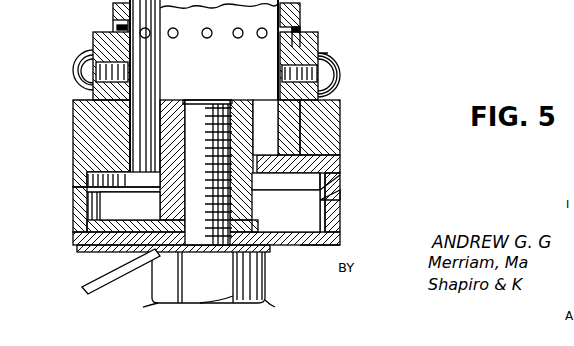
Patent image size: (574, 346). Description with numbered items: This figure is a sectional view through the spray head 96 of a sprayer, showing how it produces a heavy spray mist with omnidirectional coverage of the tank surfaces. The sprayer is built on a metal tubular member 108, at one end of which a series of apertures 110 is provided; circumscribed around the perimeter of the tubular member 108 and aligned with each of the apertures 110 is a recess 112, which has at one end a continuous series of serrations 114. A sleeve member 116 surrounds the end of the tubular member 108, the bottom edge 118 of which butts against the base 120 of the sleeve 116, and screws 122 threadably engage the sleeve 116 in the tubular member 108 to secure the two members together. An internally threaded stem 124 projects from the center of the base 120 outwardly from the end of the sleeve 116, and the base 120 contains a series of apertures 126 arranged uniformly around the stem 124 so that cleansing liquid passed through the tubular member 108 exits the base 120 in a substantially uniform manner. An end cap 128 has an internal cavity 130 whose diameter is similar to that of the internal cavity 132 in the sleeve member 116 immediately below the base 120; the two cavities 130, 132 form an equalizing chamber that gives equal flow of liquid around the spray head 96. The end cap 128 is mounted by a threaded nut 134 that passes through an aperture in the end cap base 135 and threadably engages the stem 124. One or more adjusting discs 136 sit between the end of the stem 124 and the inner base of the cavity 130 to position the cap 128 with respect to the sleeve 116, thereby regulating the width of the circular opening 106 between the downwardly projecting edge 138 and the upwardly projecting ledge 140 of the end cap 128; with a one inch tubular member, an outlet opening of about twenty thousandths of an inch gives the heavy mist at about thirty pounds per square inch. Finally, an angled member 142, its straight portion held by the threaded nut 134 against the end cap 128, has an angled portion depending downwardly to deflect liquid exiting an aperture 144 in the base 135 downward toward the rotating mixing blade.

The spray head 96 is at (342, 52).
The circular opening 106 is at (87, 187).
The tubular member 108 is at (318, 100).
The apertures 110 is at (178, 38).
The recess 112 is at (298, 31).
The serrations 114 is at (110, 25).
The sleeve member 116 is at (340, 120).
The bottom edge 118 is at (290, 155).
The base 120 is at (110, 157).
The screws 122 is at (86, 60).
The internally threaded stem 124 is at (252, 200).
The apertures 126 is at (258, 153).
The end cap 128 is at (73, 225).
The internal cavity 130 is at (87, 199).
The internal cavity 132 is at (98, 170).
The threaded nut 134 is at (153, 283).
The end cap base 135 is at (322, 245).
The adjusting discs 136 is at (160, 226).
The downwardly projecting edge 138 is at (328, 176).
The upwardly projecting ledge 140 is at (336, 197).
The angled member 142 is at (90, 276).
The aperture 144 is at (108, 251).